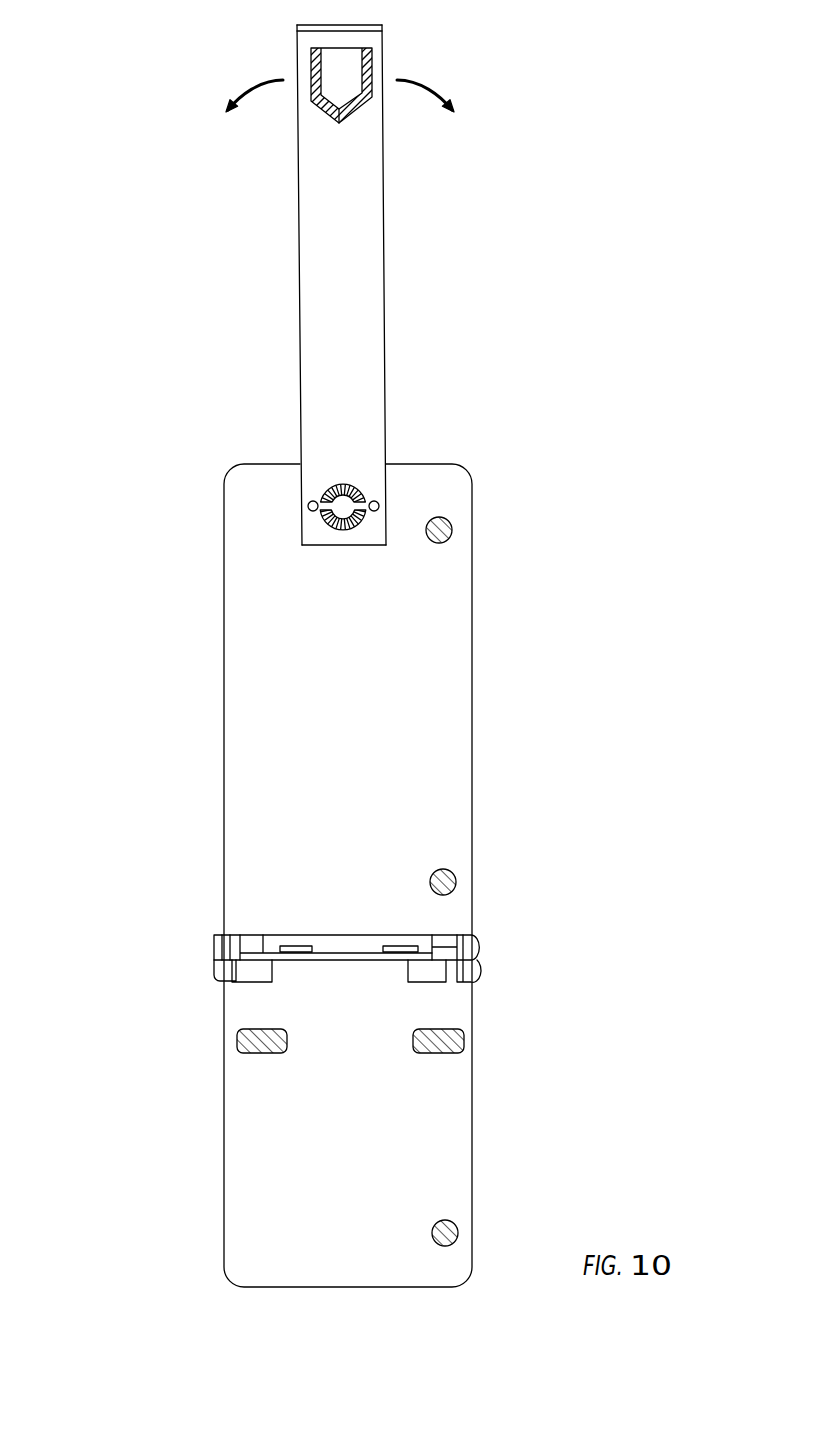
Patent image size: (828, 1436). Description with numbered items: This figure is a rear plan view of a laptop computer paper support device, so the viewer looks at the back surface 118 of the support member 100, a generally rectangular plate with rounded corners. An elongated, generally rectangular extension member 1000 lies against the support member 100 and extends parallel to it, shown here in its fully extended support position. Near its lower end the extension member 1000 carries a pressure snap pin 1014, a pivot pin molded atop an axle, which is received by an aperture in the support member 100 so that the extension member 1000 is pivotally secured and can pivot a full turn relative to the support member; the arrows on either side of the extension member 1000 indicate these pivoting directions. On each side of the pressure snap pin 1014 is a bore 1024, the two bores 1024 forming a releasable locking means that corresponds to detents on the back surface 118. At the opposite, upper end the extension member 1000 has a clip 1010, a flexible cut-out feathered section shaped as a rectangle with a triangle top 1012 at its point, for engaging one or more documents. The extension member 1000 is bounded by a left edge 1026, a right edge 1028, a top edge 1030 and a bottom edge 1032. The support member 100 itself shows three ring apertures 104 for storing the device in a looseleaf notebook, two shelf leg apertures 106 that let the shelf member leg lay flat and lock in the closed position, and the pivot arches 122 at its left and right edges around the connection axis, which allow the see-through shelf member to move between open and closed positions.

The support member 100 is at (319, 655).
The ring apertures 104 is at (439, 544).
The shelf leg apertures 106 is at (264, 1054).
The back surface 118 is at (238, 797).
The pivot arches 122 is at (480, 964).
The extension member 1000 is at (368, 310).
The clip 1010 is at (337, 82).
The triangle top 1012 is at (352, 109).
The pressure snap pin 1014 is at (356, 487).
The bores 1024 is at (307, 500).
The left edge 1026 is at (300, 212).
The right edge 1028 is at (384, 205).
The top edge 1030 is at (383, 24).
The bottom edge 1032 is at (318, 546).